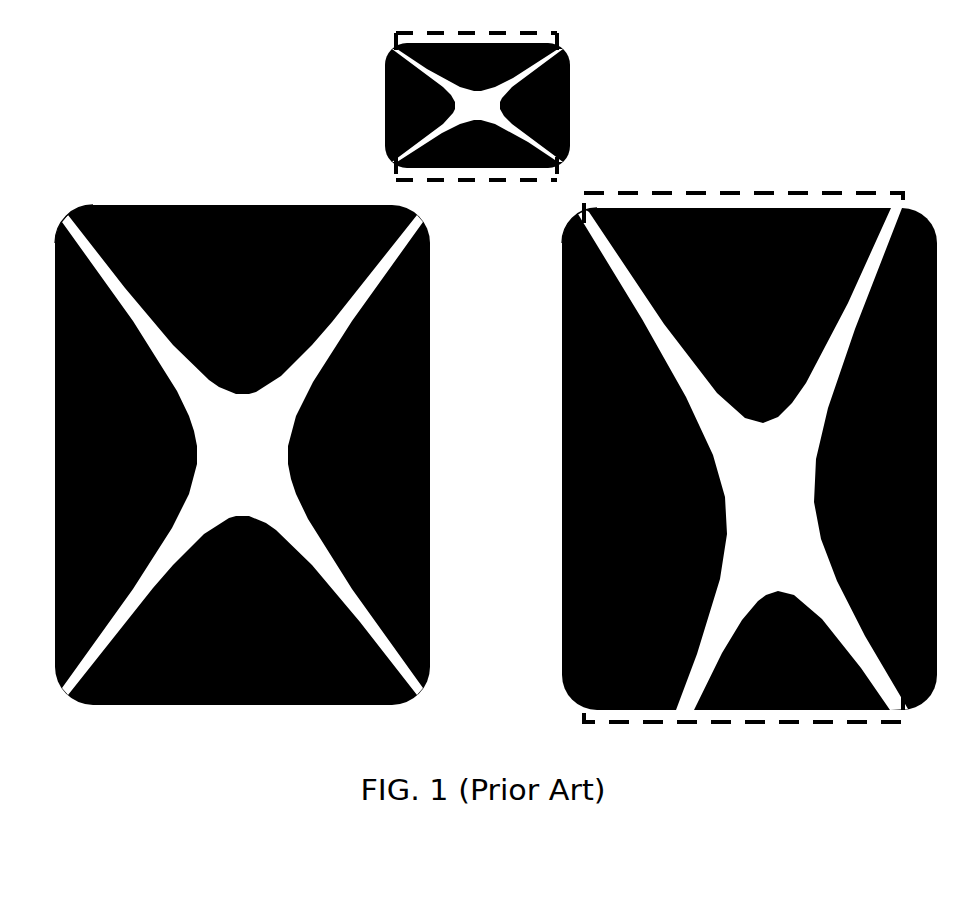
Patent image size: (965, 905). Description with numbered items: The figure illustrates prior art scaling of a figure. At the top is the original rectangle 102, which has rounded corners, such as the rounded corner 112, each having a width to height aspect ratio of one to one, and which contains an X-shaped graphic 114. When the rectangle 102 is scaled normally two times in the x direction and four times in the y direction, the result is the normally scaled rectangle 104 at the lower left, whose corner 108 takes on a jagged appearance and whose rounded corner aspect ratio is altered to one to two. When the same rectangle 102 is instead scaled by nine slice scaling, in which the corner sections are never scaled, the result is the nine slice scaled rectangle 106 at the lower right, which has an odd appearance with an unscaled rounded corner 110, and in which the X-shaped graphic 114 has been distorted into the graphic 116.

The rectangle 102 is at (385, 105).
The normally scaled rectangle 104 is at (430, 455).
The nine slice scaled rectangle 106 is at (565, 460).
The corner 108 is at (84, 226).
The unscaled rounded corner 110 is at (567, 228).
The rounded corner 112 is at (392, 40).
The graphic 114 is at (558, 34).
The graphic 116 is at (718, 193).